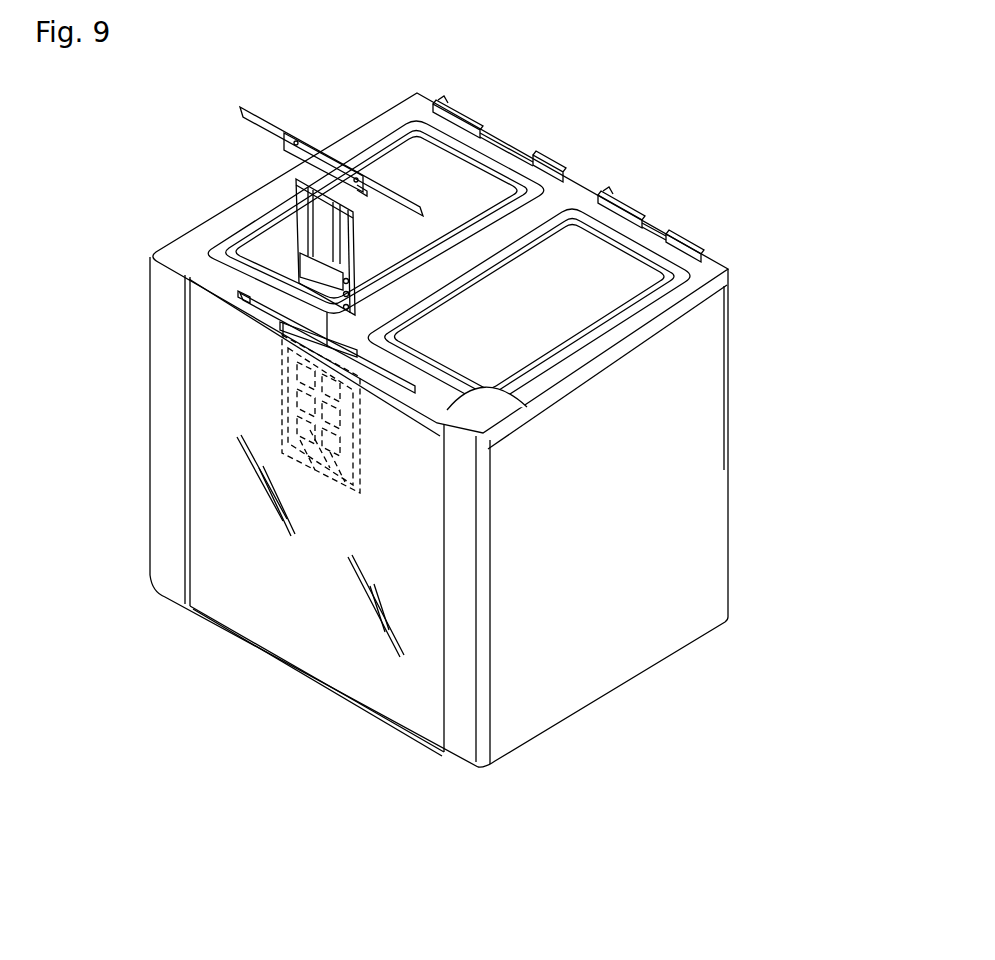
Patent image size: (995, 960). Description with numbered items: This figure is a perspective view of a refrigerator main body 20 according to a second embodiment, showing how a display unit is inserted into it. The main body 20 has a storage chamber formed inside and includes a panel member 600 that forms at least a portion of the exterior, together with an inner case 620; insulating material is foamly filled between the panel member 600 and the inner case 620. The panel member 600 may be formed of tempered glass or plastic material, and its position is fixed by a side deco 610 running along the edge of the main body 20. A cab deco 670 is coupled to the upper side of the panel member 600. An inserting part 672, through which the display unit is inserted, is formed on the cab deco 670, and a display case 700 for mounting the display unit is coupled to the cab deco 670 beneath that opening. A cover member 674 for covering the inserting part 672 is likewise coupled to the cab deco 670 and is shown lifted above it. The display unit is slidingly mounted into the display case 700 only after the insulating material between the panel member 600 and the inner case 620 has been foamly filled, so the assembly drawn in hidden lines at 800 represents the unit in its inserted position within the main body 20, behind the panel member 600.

The main body 20 is at (740, 340).
The panel member 600 is at (303, 640).
The side deco 610 is at (160, 515).
The inner case 620 is at (510, 401).
The cab deco 670 is at (216, 291).
The inserting part 672 is at (380, 344).
The cover member 674 is at (313, 152).
The display case 700 is at (292, 268).
The connector terminal 800 is at (292, 438).